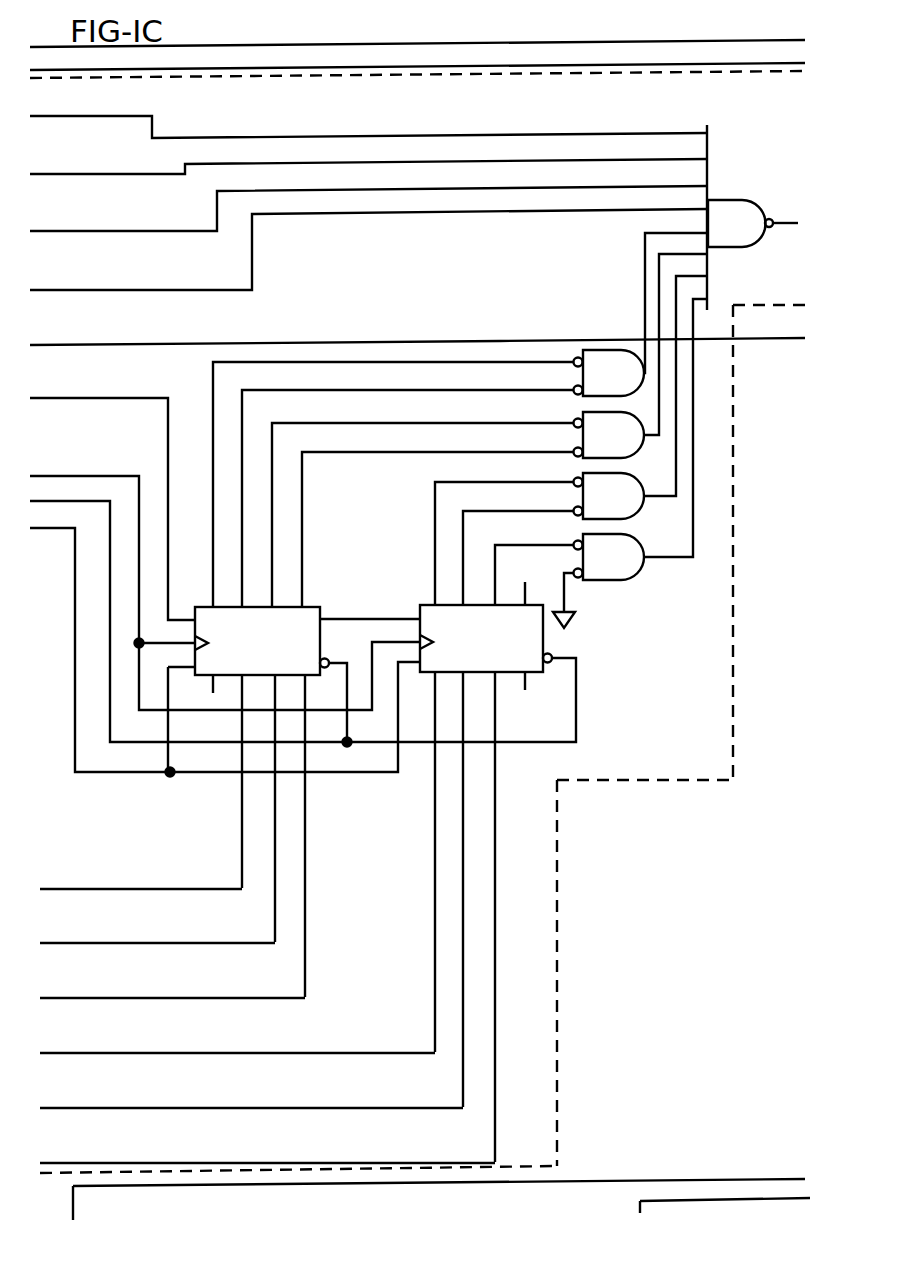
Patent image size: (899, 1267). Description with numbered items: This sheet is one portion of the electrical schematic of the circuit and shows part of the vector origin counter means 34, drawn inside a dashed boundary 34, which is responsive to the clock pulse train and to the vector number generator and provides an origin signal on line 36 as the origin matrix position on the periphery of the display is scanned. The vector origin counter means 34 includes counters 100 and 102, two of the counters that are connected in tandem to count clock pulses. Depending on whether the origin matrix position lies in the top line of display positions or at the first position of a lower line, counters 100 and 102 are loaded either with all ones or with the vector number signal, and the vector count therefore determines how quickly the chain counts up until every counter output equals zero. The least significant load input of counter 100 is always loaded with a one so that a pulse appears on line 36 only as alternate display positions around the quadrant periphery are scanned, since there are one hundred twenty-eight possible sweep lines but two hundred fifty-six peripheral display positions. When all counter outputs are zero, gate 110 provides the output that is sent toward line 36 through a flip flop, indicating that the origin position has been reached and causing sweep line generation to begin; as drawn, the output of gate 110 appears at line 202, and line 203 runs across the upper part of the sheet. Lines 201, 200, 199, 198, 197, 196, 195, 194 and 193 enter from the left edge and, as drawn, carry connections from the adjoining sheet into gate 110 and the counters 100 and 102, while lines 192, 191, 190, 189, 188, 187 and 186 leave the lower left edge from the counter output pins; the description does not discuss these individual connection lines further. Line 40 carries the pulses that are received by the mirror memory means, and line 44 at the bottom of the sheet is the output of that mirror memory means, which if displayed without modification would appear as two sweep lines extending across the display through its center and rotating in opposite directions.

The line 36 is at (245, 46).
The line 40 is at (70, 70).
The vector origin counter means 34 is at (437, 78).
The input line 201 is at (42, 116).
The input line 200 is at (42, 174).
The input line 199 is at (42, 231).
The input line 198 is at (42, 290).
The input line 197 is at (42, 345).
The input line 196 is at (42, 398).
The input line 195 is at (42, 476).
The input line 194 is at (42, 501).
The input line 193 is at (36, 528).
The counter 100 is at (309, 606).
The counter 102 is at (428, 604).
The gate 110 is at (758, 200).
The output line 202 is at (790, 224).
The line 203 is at (752, 339).
The output line 192 is at (52, 889).
The output line 191 is at (52, 943).
The output line 190 is at (52, 998).
The output line 189 is at (52, 1053).
The output line 188 is at (52, 1108).
The output line 187 is at (46, 1163).
The line 186 is at (76, 1196).
The line 44 is at (708, 1203).